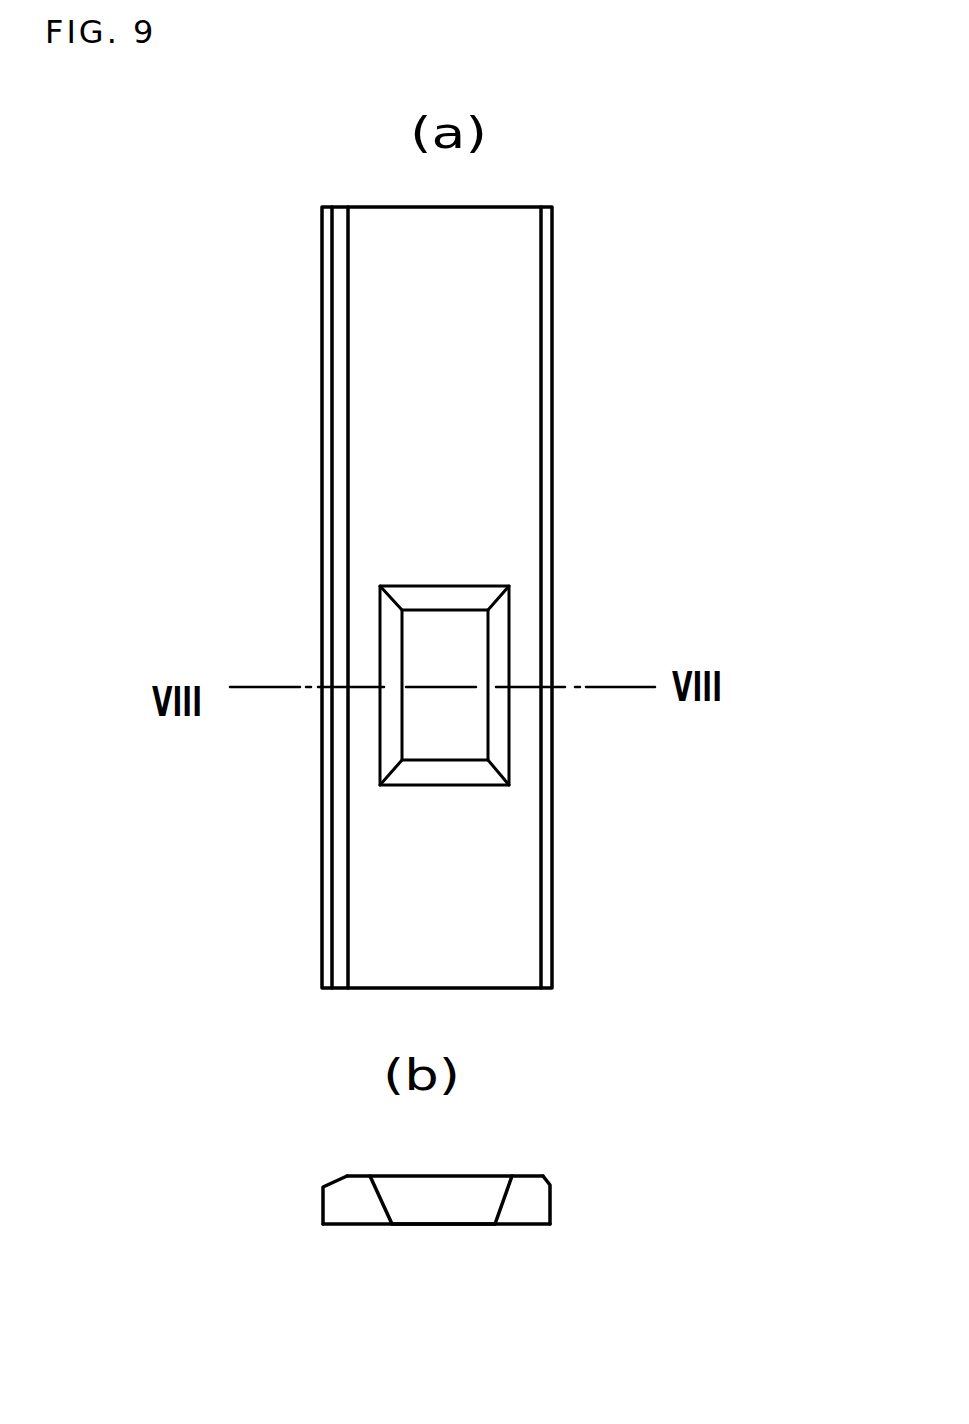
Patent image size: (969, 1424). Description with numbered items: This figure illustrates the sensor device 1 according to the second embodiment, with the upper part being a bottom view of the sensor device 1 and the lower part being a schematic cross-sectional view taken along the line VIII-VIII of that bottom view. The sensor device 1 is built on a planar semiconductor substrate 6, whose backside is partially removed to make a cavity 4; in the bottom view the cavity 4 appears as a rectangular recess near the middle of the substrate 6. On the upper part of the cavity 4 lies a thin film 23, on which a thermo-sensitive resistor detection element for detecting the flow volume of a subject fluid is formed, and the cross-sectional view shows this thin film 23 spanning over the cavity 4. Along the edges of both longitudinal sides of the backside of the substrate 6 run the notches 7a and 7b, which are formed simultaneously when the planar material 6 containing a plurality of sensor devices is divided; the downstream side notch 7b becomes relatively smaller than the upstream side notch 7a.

The sensor device 1 is at (467, 864).
The cavity 4 is at (450, 723).
The planar semiconductor substrate 6 is at (467, 494).
The upstream side notch 7a is at (340, 370).
The downstream side notch 7b is at (545, 333).
The thin film 23 is at (440, 1223).